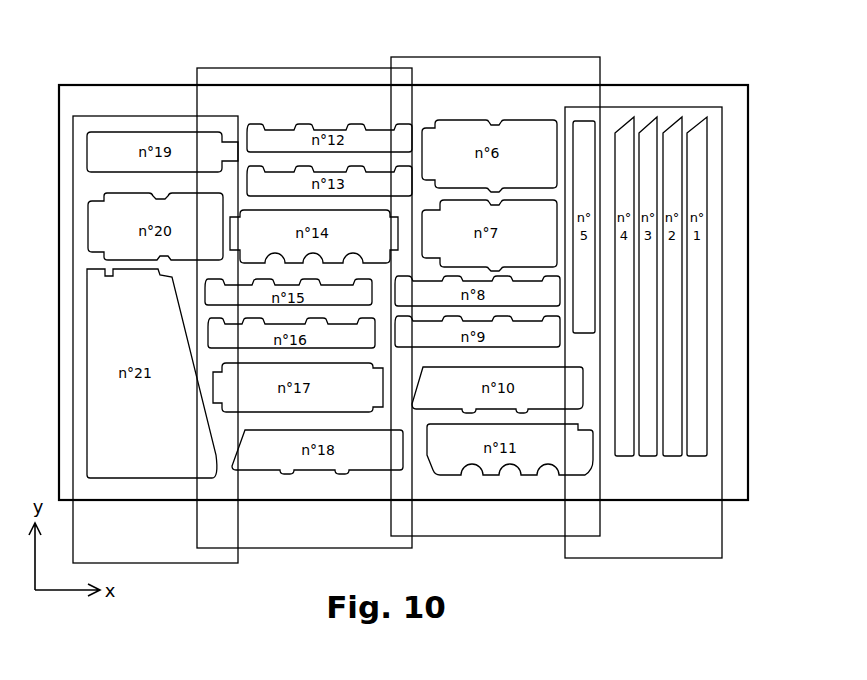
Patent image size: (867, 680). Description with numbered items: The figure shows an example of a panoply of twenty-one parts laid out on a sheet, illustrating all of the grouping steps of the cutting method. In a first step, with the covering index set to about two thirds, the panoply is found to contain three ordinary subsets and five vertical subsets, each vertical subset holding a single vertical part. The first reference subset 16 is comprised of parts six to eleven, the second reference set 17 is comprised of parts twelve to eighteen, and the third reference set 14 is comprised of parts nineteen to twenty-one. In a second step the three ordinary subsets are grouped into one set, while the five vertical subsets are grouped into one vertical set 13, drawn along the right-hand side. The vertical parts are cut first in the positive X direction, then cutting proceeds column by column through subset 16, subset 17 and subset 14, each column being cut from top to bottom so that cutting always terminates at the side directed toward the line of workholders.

The vertical set 13 is at (645, 107).
The third reference set 14 is at (148, 115).
The first reference subset 16 is at (498, 57).
The second reference set 17 is at (271, 68).